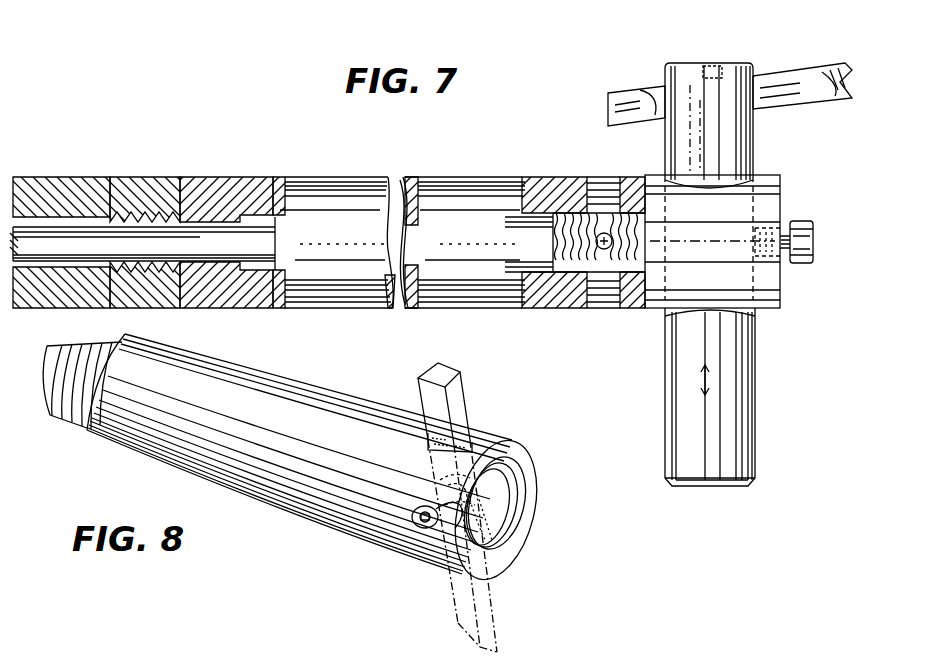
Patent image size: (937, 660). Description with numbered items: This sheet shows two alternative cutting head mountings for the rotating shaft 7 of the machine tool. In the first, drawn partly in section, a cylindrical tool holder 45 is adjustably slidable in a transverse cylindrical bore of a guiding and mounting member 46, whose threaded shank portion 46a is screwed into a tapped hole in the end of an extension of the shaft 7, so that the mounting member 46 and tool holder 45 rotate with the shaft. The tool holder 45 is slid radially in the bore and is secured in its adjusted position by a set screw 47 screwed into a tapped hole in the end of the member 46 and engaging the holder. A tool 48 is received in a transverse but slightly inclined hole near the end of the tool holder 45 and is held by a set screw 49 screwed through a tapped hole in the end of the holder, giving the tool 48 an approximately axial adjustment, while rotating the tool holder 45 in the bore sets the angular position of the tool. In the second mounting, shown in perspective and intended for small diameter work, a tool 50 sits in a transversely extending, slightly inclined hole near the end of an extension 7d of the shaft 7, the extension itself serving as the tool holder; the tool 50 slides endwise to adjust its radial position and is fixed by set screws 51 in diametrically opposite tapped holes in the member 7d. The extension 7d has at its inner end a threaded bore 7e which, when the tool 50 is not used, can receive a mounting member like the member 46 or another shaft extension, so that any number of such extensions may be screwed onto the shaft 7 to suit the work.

In FIG. 7, the rotating shaft 7 is at (73, 177).
In FIG. 8, the extension of the shaft 7d is at (298, 388).
In FIG. 8, the threaded bore 7e is at (520, 488).
In FIG. 7, the cylindrical tool holder 45 is at (756, 384).
In FIG. 7, the guiding and mounting member 46 is at (785, 178).
In FIG. 7, the threaded shank portion 46a is at (577, 220).
In FIG. 7, the set screw 47 is at (806, 229).
In FIG. 7, the tool 48 is at (792, 70).
In FIG. 7, the set screw 49 is at (712, 72).
In FIG. 8, the tool 50 is at (470, 390).
In FIG. 8, the set screws 51 is at (424, 530).